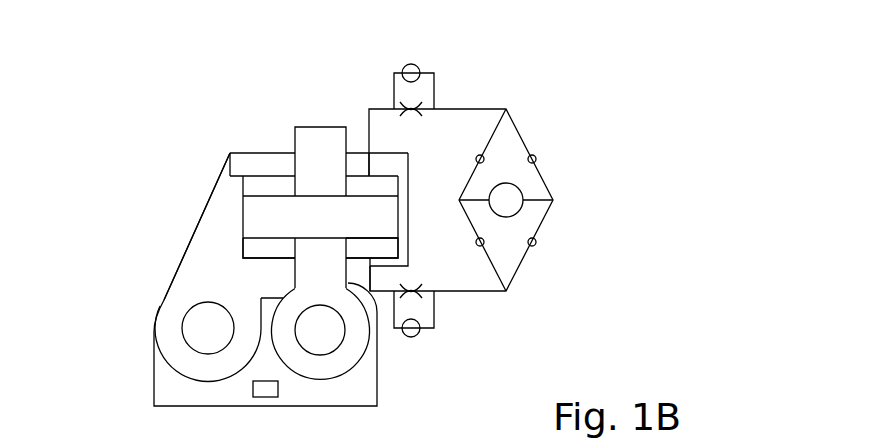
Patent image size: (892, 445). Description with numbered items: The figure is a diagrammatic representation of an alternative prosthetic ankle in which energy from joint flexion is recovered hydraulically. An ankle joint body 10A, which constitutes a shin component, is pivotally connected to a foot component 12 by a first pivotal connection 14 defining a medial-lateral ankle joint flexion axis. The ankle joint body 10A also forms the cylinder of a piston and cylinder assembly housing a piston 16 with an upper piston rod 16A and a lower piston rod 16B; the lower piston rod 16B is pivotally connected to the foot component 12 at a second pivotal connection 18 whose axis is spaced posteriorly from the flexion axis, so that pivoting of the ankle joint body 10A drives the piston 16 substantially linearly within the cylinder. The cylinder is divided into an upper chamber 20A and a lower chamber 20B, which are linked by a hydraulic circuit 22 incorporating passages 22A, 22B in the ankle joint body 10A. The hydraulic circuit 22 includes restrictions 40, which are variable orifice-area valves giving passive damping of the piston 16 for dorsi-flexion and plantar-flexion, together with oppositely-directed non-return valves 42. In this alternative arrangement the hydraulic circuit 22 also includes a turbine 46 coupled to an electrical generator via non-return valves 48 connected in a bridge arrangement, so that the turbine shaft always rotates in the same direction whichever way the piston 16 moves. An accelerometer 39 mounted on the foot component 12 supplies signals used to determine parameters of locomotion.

The ankle joint body 10A is at (190, 238).
The foot component 12 is at (162, 393).
The first pivotal connection 14 is at (193, 322).
The piston 16 is at (248, 217).
The upper piston rod 16A is at (302, 143).
The lower piston rod 16B is at (349, 253).
The second pivotal connection 18 is at (333, 346).
The upper chamber 20A is at (237, 168).
The lower chamber 20B is at (250, 252).
The hydraulic circuit 22 is at (371, 108).
The passage 22A is at (372, 165).
The passage 22B is at (372, 273).
The accelerometer 39 is at (258, 390).
The restriction 40 is at (415, 105).
The non-return valve 42 is at (417, 67).
The turbine 46 is at (522, 192).
The non-return valves 48 is at (534, 156).